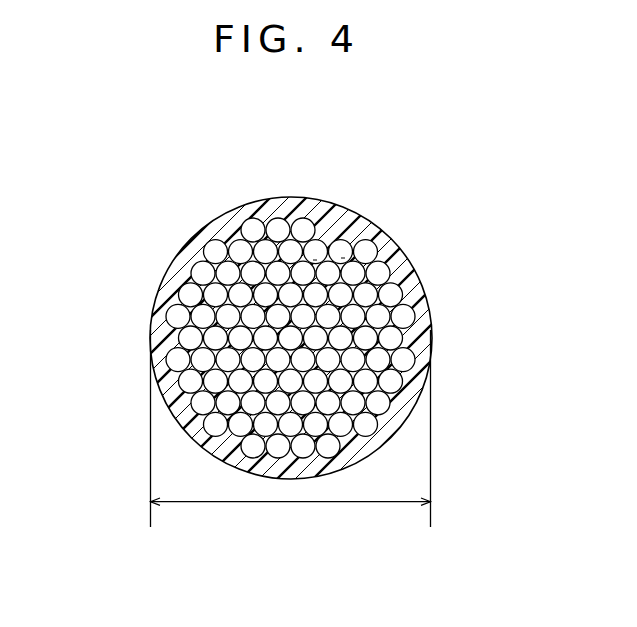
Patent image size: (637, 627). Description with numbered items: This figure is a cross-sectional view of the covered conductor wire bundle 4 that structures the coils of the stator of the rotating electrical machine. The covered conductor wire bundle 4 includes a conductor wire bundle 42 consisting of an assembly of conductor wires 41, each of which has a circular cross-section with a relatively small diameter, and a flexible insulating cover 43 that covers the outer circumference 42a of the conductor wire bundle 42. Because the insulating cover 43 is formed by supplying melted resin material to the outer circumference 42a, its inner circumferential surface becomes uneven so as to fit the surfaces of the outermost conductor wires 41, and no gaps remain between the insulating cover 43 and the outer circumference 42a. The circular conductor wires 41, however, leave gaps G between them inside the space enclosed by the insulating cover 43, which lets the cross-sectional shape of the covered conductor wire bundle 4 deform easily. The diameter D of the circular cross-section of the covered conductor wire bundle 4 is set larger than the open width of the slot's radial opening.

The covered conductor wire bundle 4 is at (179, 250).
The conductor wire 41 is at (392, 337).
The conductor wire bundle 42 is at (269, 286).
The outer circumference of the conductor wire bundle 42a is at (160, 291).
The insulating cover 43 is at (412, 330).
The gap G is at (348, 218).
The diameter of the cross-section of the covered conductor wire bundle D is at (291, 429).